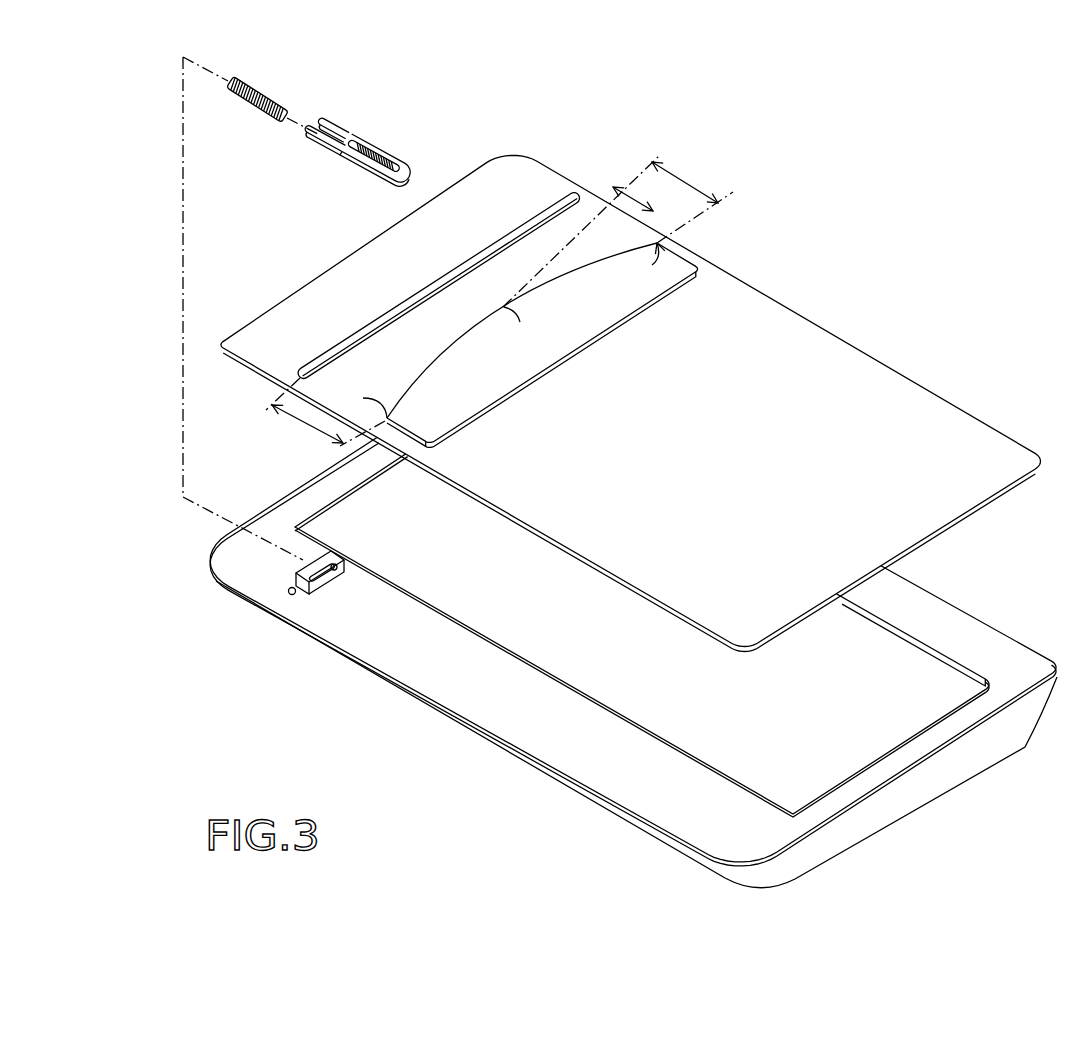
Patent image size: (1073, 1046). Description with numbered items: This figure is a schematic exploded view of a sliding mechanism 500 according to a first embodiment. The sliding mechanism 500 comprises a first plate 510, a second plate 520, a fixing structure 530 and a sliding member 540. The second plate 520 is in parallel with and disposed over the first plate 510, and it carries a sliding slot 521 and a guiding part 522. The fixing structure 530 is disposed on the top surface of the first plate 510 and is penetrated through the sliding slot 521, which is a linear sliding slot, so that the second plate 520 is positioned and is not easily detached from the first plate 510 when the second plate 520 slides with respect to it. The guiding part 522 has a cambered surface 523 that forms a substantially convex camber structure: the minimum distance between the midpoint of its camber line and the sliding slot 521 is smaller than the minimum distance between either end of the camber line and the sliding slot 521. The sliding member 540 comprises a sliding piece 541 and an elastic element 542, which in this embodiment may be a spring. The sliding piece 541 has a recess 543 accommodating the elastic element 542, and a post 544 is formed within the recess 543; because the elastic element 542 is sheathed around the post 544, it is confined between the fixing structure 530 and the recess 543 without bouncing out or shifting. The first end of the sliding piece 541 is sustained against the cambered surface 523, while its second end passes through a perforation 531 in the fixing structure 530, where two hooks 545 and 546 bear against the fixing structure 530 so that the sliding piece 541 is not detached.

The sliding mechanism 500 is at (957, 141).
The first plate 510 is at (972, 640).
The second plate 520 is at (973, 440).
The sliding slot 521 is at (430, 297).
The guiding part 522 is at (499, 301).
The cambered surface 523 is at (408, 394).
The fixing structure 530 is at (346, 573).
The perforation 531 is at (332, 573).
The sliding member 540 is at (330, 292).
The sliding piece 541 is at (350, 150).
The elastic element 542 is at (250, 104).
The recess 543 is at (345, 140).
The post 544 is at (397, 134).
The hook 545 is at (303, 140).
The hook 546 is at (323, 119).